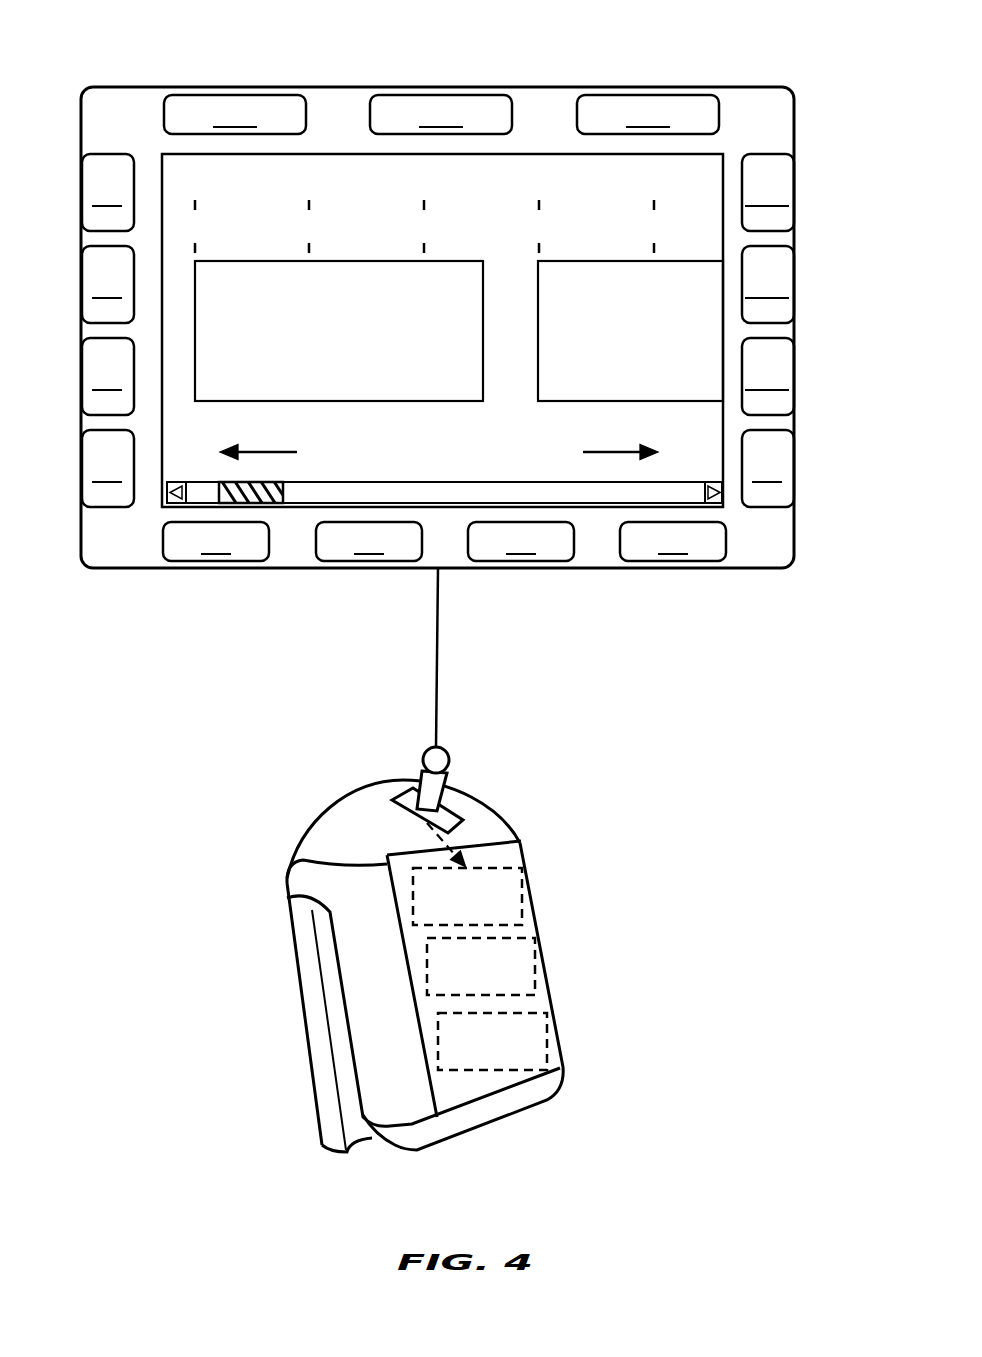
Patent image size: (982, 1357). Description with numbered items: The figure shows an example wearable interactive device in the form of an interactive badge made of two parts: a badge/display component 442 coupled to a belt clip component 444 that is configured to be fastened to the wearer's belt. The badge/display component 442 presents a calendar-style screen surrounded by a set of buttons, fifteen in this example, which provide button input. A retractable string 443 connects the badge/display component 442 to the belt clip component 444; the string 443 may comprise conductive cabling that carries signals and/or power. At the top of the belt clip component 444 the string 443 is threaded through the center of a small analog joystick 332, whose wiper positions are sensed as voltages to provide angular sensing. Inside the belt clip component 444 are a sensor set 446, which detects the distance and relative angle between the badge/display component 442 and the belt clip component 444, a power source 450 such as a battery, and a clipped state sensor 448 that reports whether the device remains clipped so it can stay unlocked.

The badge/display component 442 is at (545, 123).
The string 443 is at (436, 695).
The analog joystick 332 is at (443, 793).
The belt clip component 444 is at (330, 815).
The sensor set 446 is at (510, 915).
The power source 450 is at (520, 968).
The clipped state sensor 448 is at (530, 1053).